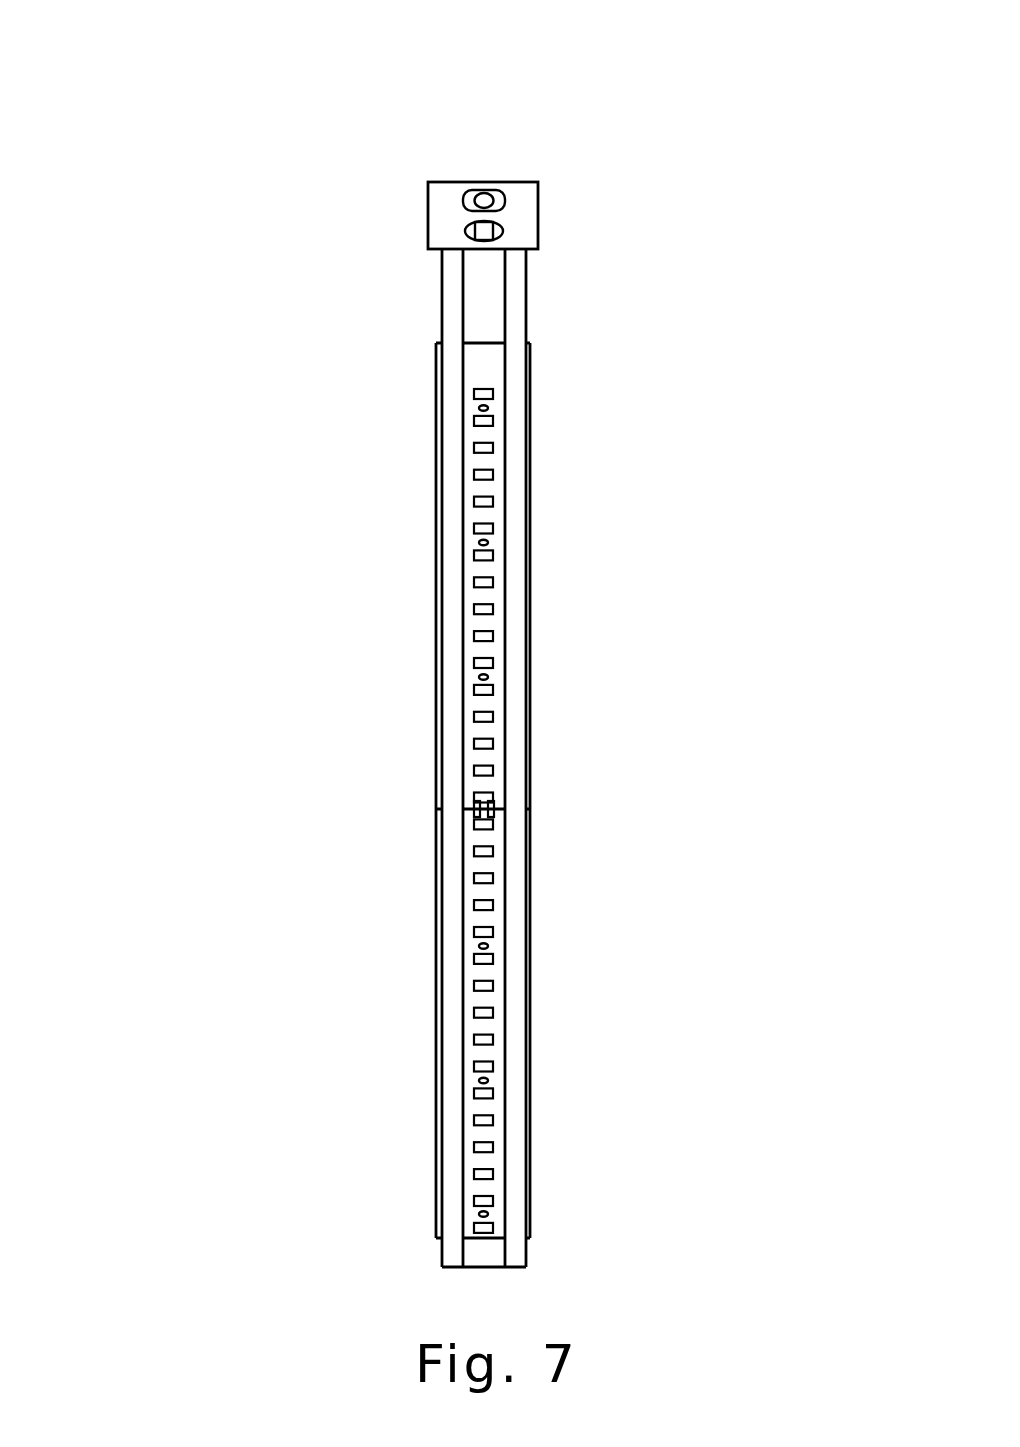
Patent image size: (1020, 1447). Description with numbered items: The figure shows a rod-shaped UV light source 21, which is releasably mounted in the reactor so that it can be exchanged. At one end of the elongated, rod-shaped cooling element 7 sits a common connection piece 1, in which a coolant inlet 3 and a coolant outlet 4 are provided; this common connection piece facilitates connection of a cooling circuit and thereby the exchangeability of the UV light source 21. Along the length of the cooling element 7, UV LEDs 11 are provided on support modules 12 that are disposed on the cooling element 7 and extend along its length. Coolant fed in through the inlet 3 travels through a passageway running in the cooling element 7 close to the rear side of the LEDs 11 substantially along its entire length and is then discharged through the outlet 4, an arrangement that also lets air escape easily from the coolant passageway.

The connection piece 1 is at (453, 210).
The coolant inlet 3 is at (486, 200).
The coolant outlet 4 is at (487, 231).
The cooling element 7 is at (490, 327).
The UV LEDs 11 is at (484, 446).
The support modules 12 is at (487, 594).
The UV light source 21 is at (333, 1225).